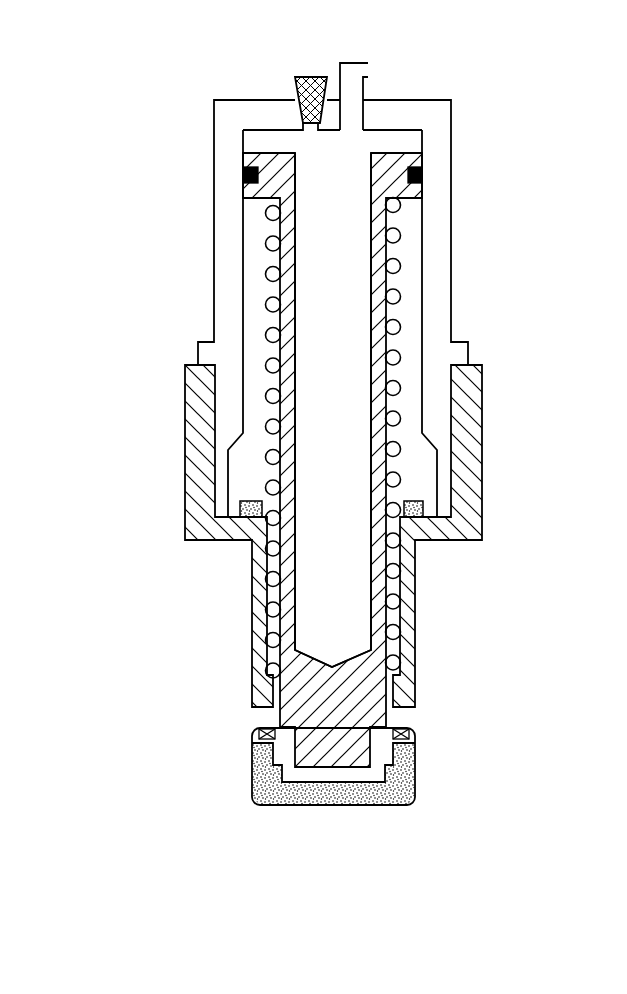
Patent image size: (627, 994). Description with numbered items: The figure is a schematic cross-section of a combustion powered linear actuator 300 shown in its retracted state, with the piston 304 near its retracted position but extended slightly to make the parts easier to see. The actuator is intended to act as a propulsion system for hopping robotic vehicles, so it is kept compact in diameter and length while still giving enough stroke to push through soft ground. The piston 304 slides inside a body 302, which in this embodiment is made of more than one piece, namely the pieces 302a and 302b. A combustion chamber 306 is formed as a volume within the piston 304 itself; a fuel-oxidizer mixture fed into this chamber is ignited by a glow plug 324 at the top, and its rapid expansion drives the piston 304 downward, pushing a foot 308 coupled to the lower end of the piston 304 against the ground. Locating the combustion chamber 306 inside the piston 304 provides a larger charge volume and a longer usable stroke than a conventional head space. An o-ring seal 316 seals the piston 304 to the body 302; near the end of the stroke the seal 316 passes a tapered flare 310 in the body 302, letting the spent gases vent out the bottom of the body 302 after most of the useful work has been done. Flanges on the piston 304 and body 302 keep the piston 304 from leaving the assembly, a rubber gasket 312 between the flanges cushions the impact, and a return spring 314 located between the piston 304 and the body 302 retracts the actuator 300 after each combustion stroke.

The combustion powered linear actuator 300 is at (512, 62).
The body 302 is at (191, 165).
The body piece 302a is at (222, 332).
The body piece 302b is at (195, 417).
The piston 304 is at (290, 285).
The combustion chamber 306 is at (347, 266).
The foot 308 is at (262, 770).
The tapered flare 310 is at (227, 465).
The rubber gasket 312 is at (419, 507).
The return spring 314 is at (395, 356).
The o-ring seal 316 is at (417, 174).
The glow plug 324 is at (312, 83).